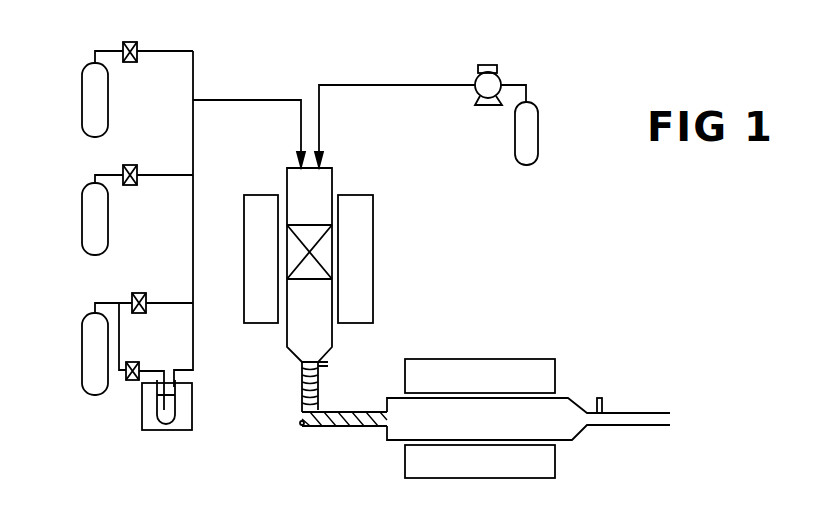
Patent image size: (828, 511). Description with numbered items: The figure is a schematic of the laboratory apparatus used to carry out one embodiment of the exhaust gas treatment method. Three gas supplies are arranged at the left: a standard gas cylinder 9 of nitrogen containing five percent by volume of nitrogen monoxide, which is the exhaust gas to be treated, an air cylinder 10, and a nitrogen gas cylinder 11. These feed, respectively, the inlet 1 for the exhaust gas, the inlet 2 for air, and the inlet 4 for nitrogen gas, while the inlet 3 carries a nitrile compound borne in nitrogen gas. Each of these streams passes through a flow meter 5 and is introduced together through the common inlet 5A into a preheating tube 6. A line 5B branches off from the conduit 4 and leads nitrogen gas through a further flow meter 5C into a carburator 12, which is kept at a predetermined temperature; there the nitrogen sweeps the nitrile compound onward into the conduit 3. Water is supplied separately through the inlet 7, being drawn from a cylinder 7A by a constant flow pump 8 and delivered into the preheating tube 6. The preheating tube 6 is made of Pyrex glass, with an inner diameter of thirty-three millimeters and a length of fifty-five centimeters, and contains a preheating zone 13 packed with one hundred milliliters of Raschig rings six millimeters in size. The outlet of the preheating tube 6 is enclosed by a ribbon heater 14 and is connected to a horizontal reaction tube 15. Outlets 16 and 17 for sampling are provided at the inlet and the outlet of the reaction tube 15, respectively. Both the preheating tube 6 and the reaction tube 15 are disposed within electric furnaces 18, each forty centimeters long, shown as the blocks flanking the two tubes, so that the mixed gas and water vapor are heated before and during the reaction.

The inlet for exhaust gas 1 is at (164, 51).
The inlet for air 2 is at (158, 175).
The inlet for nitrile compound carried in nitrogen gas 3 is at (193, 335).
The inlet for nitrogen gas 4 is at (158, 303).
The flow meter 5 is at (136, 42).
The inlet 5A is at (239, 100).
The line 5B is at (119, 350).
The flow meter 5C is at (132, 380).
The preheating tube 6 is at (333, 182).
The inlet for water 7 is at (398, 85).
The cylinder 7A is at (515, 132).
The constant flow pump 8 is at (478, 73).
The standard gas cylinder 9 is at (82, 76).
The air cylinder 10 is at (82, 201).
The nitrogen gas cylinder 11 is at (82, 329).
The carburator 12 is at (172, 431).
The preheating zone 13 is at (333, 250).
The ribbon heater 14 is at (332, 428).
The reaction tube 15 is at (392, 441).
The outlet for sampling 16 is at (328, 364).
The outlet for sampling 17 is at (601, 398).
The electric furnaces 18 is at (373, 302).